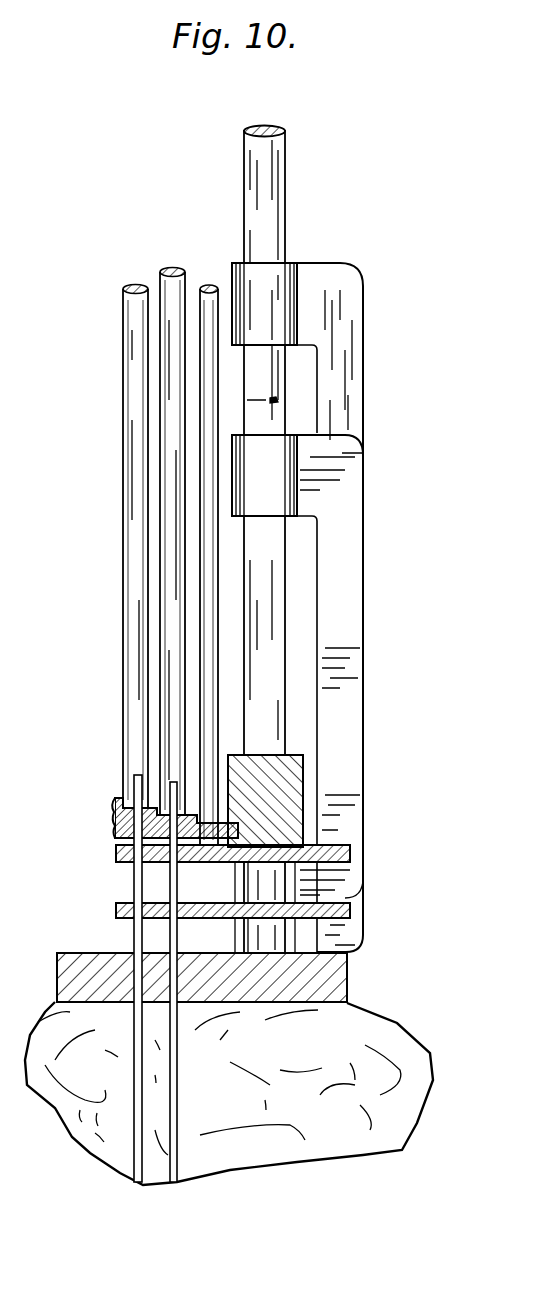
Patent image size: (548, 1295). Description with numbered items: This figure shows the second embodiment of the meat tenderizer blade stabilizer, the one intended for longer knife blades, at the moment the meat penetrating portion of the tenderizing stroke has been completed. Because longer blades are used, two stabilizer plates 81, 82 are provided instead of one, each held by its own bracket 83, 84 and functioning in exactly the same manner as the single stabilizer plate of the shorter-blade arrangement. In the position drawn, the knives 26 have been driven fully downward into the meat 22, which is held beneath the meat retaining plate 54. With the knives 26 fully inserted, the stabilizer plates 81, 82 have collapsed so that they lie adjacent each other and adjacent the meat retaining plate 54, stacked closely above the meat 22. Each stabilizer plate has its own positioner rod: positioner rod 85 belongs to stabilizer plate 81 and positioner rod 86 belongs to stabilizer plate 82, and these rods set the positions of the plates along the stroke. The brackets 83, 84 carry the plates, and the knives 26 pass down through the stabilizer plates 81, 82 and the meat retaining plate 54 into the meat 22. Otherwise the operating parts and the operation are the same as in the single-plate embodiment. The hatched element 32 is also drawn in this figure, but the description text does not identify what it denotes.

The meat 22 is at (229, 1093).
The knives 26 is at (138, 1107).
The hatched block 32 is at (287, 775).
The meat retaining plate 54 is at (327, 977).
The stabilizer plate 81 is at (340, 852).
The stabilizer plate 82 is at (345, 908).
The bracket 83 is at (348, 562).
The bracket 84 is at (348, 399).
The positioner rod 85 is at (212, 473).
The positioner rod 86 is at (212, 882).